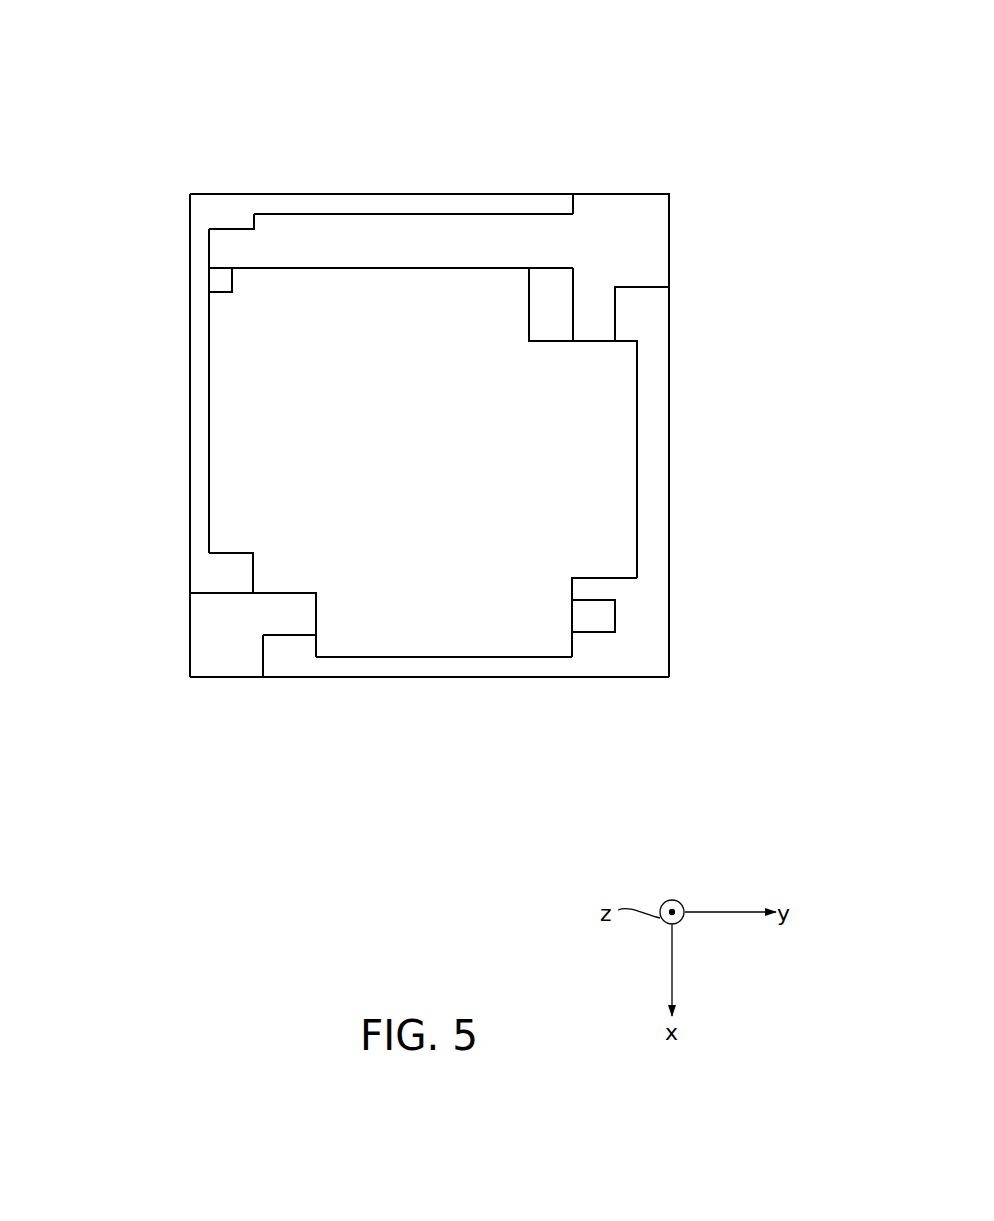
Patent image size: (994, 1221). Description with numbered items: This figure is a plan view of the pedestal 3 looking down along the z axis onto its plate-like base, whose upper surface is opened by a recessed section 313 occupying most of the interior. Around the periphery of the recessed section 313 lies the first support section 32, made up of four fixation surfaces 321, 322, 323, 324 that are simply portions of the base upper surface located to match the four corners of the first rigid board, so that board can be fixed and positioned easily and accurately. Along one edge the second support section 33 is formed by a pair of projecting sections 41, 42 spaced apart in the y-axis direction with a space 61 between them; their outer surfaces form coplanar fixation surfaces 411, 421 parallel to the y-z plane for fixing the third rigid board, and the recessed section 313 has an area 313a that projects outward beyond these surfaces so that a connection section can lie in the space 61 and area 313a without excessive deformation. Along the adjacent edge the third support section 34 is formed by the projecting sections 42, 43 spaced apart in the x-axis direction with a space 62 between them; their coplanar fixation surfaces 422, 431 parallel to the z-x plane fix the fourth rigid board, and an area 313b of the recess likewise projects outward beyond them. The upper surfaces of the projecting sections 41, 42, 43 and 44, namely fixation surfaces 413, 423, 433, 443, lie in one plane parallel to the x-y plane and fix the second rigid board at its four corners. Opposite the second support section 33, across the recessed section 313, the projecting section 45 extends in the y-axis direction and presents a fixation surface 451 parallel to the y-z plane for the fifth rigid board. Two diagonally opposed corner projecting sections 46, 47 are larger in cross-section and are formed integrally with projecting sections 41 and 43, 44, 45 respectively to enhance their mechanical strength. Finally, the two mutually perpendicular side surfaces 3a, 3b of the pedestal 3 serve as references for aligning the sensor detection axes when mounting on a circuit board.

The pedestal 3 is at (485, 93).
The side surface 3a is at (235, 678).
The side surface 3b is at (188, 583).
The first support section 32 is at (105, 291).
The second support section 33 is at (583, 813).
The third support section 34 is at (785, 293).
The projecting section 41 is at (285, 640).
The projecting section 42 is at (604, 640).
The projecting section 43 is at (590, 344).
The projecting section 44 is at (230, 226).
The projecting section 45 is at (302, 212).
The projecting section 46 is at (186, 647).
The projecting section 47 is at (634, 191).
The space 61 is at (413, 630).
The space 62 is at (598, 457).
The recessed section 313 is at (475, 288).
The area 313a is at (475, 640).
The area 313b is at (625, 388).
The fixation surface 321 is at (232, 574).
The fixation surface 322 is at (590, 590).
The fixation surface 323 is at (552, 307).
The fixation surface 324 is at (219, 279).
The fixation surface 411 is at (302, 637).
The fixation surface 413 is at (282, 612).
The fixation surface 421 is at (588, 637).
The fixation surface 422 is at (617, 608).
The fixation surface 423 is at (603, 620).
The fixation surface 431 is at (616, 322).
The fixation surface 433 is at (590, 316).
The fixation surface 443 is at (223, 249).
The fixation surface 451 is at (388, 213).